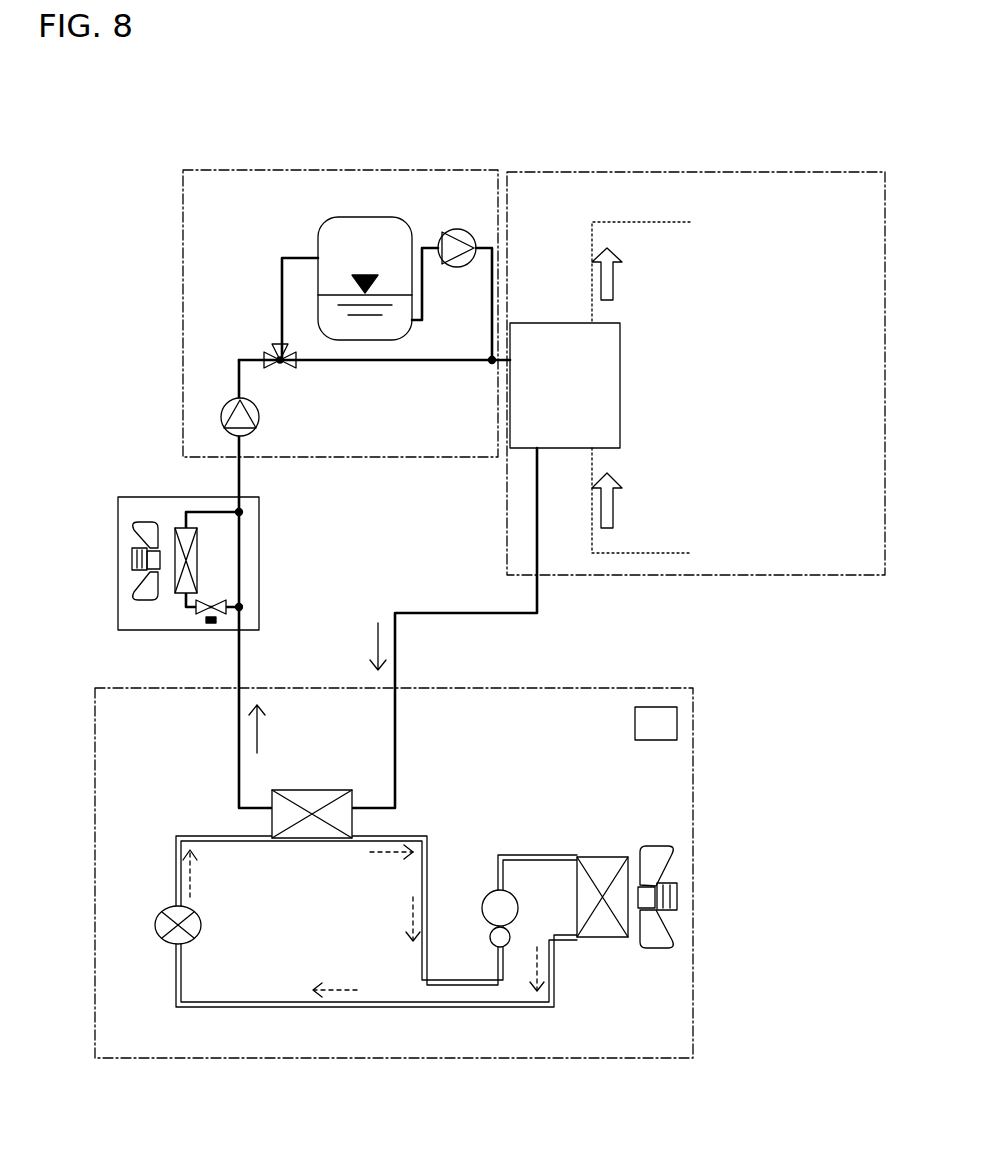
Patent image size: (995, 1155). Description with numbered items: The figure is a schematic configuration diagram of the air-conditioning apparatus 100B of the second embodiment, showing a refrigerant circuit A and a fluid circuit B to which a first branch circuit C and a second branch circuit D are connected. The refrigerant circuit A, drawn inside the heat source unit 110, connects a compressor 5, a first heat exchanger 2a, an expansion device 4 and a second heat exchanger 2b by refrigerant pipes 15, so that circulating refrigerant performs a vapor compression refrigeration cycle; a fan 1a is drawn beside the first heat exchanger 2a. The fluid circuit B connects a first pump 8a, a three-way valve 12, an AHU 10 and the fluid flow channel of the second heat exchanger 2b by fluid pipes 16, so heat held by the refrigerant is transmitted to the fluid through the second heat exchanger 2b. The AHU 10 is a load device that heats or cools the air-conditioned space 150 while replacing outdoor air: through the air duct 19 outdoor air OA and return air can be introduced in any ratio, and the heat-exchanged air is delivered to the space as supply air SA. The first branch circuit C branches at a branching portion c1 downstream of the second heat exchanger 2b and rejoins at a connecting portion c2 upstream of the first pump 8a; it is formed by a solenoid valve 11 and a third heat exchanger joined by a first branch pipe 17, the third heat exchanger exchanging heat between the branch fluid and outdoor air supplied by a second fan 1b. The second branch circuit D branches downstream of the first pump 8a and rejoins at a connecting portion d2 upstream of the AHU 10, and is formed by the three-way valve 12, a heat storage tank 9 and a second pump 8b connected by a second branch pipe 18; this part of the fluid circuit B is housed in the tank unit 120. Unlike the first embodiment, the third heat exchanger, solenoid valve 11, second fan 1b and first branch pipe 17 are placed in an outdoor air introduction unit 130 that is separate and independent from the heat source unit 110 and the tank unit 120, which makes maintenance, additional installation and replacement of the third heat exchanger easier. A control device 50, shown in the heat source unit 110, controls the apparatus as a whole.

The air-conditioning apparatus 100B is at (122, 462).
The tank unit 120 is at (182, 270).
The outdoor air introduction unit 130 is at (118, 538).
The heat source unit 110 is at (97, 688).
The air-conditioned space 150 is at (798, 575).
The heat storage tank 9 is at (417, 245).
The second branch pipe 18 is at (282, 276).
The three-way valve 12 is at (273, 350).
The branching portion c1 is at (284, 363).
The connecting portion c2 is at (239, 515).
The connecting portion d2 is at (490, 362).
The first pump 8a is at (259, 417).
The second pump 8b is at (458, 268).
The AHU 10 is at (620, 380).
The air duct 19 is at (658, 222).
The fluid pipes 16 is at (239, 480).
The first branch pipe 17 is at (182, 523).
The solenoid valve 11 is at (193, 610).
The fan 1a is at (137, 596).
The second fan 1b is at (655, 845).
The first heat exchanger 2a is at (600, 937).
The second heat exchanger 2b is at (315, 840).
The expansion device 4 is at (201, 925).
The compressor 5 is at (482, 906).
The refrigerant pipes 15 is at (248, 1000).
The control device 50 is at (677, 722).
The refrigerant circuit A is at (525, 850).
The fluid circuit B is at (435, 623).
The first branch circuit C is at (178, 608).
The second branch circuit D is at (293, 243).
The supply air SA is at (616, 274).
The outdoor air OA is at (633, 500).